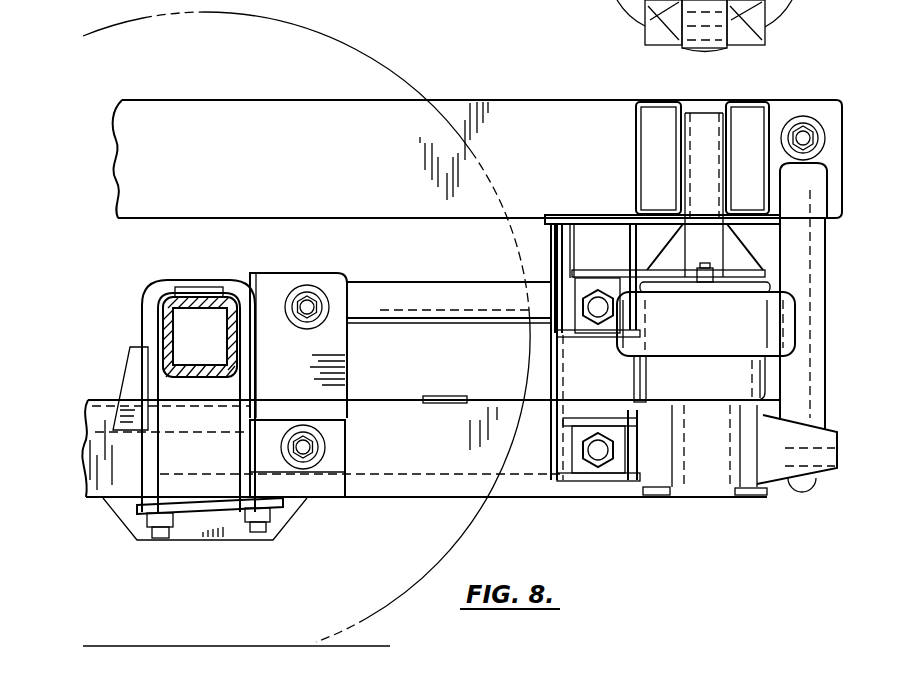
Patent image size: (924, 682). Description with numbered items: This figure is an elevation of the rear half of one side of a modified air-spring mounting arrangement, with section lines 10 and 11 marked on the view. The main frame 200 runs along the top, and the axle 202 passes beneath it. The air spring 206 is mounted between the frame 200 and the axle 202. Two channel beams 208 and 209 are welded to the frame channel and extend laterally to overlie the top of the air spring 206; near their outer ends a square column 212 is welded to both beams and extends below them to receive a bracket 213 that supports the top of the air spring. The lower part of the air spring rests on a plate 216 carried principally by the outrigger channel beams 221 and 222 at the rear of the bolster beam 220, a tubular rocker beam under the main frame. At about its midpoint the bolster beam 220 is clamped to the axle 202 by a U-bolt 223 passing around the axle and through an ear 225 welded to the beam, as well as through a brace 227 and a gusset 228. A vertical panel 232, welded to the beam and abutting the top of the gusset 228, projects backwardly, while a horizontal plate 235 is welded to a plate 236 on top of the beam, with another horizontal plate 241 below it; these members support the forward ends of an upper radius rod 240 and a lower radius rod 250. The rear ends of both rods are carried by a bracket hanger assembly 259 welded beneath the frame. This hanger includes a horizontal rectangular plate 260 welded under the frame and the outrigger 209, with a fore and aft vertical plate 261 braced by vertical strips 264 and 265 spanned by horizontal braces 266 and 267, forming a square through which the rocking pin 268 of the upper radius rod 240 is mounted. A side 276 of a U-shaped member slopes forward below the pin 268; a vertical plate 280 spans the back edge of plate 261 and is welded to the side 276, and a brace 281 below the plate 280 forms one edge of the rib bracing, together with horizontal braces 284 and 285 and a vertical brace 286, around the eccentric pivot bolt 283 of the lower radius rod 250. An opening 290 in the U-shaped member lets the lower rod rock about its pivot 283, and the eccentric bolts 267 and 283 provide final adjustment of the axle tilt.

The section line 10- 10 is at (840, 98).
The section line 11- 11 is at (362, 78).
The main frame 200 is at (513, 106).
The axle 202 is at (170, 311).
The air spring 206 is at (739, 337).
The channel beam 208 is at (652, 100).
The channel beam 209 is at (742, 78).
The square column 212 is at (690, 141).
The bracket 213 is at (647, 26).
The plate 216 is at (632, 400).
The bolster beam 220 is at (445, 503).
The outrigger channel beam 221 is at (655, 496).
The outrigger channel beam 222 is at (743, 494).
The U-bolt 223 is at (155, 287).
The ear 225 is at (135, 517).
The brace 227 is at (230, 536).
The gusset 228 is at (260, 483).
The vertical panel 232 is at (348, 386).
The horizontal plate 235 is at (287, 388).
The plate 236 is at (432, 396).
The upper radius rod 240 is at (432, 292).
The horizontal plate 241 is at (328, 486).
The lower radius rod 250 is at (403, 493).
The bracket hanger assembly 259 is at (545, 373).
The horizontal rectangular plate 260 is at (587, 216).
The vertical plate 261 is at (610, 216).
The vertical metal bracing strip 264 is at (553, 226).
The vertical metal bracing strip 265 is at (652, 216).
The horizontal brace 266 is at (602, 258).
The horizontal brace 267 is at (568, 340).
The rocking pin 268 is at (555, 326).
The side 276 is at (667, 376).
The vertical plate 280 is at (645, 309).
The brace 281 is at (646, 340).
The pivot bolt 283 is at (597, 455).
The horizontal brace 284 is at (563, 421).
The horizontal brace 285 is at (628, 479).
The vertical brace 286 is at (563, 451).
The opening 290 is at (560, 478).